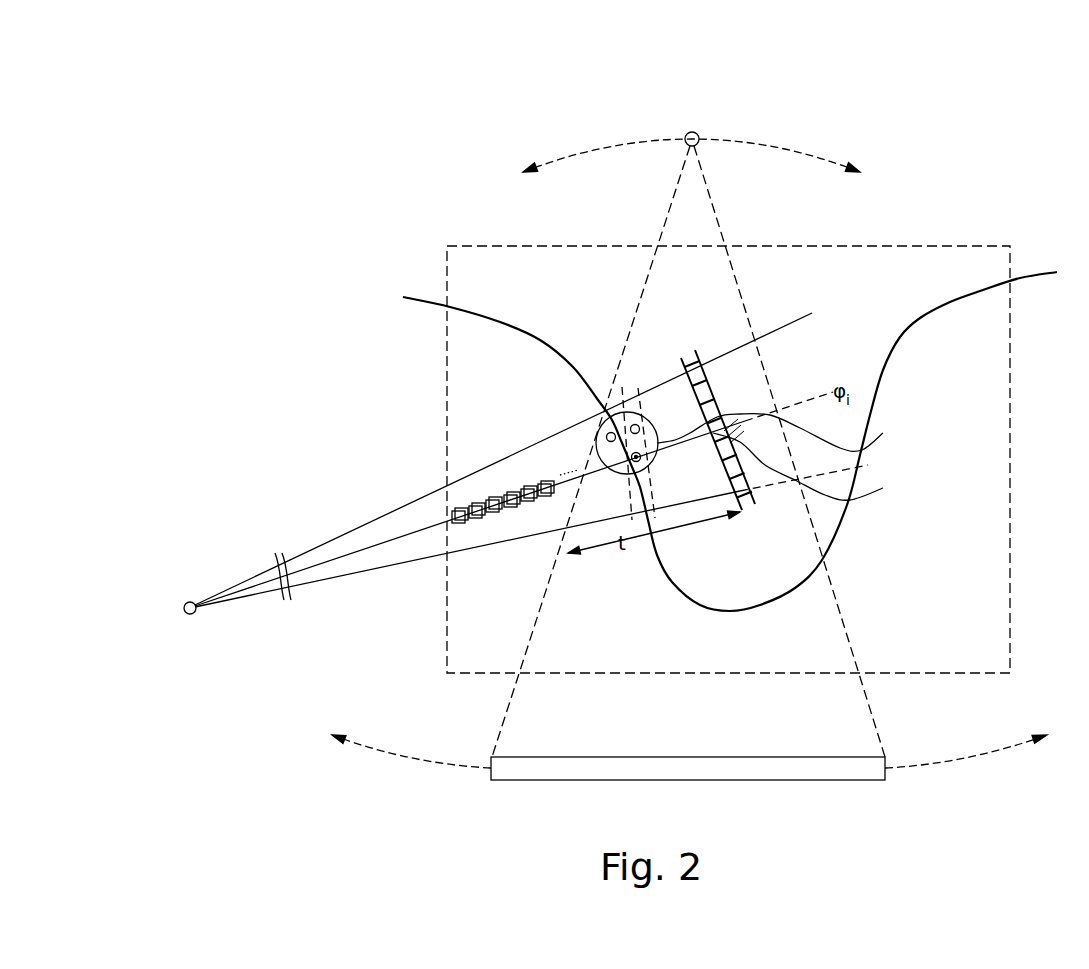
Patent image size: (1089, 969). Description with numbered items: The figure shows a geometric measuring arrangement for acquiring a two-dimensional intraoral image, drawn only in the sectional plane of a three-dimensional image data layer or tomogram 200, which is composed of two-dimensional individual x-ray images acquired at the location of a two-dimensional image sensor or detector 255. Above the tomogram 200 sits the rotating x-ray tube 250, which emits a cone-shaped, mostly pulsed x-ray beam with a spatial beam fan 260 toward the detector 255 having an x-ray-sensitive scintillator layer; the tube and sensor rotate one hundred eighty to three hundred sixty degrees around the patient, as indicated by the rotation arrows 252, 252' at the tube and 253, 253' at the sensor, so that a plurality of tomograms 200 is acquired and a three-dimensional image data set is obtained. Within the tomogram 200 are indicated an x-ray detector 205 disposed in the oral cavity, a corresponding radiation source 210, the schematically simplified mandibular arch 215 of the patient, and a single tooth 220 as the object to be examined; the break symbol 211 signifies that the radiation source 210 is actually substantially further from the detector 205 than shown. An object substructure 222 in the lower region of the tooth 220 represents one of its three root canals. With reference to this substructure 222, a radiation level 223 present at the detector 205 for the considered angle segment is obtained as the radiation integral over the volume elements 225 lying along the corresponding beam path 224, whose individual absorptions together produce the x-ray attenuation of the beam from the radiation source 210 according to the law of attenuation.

The 3D image data layer (tomogram) 200 is at (883, 246).
The x-ray detector 205 is at (702, 372).
The radiation source 210 is at (185, 603).
The distance indication 211 is at (277, 556).
The mandibular arch 215 is at (847, 508).
The tooth 220 is at (597, 444).
The object substructure 222 is at (816, 466).
The radiation level / angle segment 223 is at (788, 433).
The beam path 224 is at (348, 575).
The volume elements 225 is at (527, 506).
The x-ray tube 250 is at (692, 132).
The rotation direction of x-ray tube 252 is at (670, 124).
The opposite rotation direction of x-ray tube 252' is at (874, 124).
The rotation direction of detector 253 is at (965, 789).
The opposite rotation direction of detector 253' is at (410, 789).
The image sensor / detector 255 is at (730, 768).
The beam fan 260 is at (745, 293).